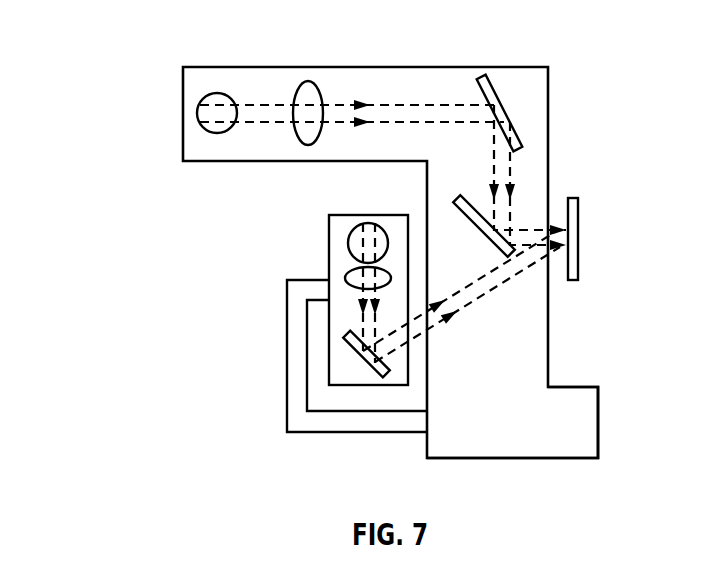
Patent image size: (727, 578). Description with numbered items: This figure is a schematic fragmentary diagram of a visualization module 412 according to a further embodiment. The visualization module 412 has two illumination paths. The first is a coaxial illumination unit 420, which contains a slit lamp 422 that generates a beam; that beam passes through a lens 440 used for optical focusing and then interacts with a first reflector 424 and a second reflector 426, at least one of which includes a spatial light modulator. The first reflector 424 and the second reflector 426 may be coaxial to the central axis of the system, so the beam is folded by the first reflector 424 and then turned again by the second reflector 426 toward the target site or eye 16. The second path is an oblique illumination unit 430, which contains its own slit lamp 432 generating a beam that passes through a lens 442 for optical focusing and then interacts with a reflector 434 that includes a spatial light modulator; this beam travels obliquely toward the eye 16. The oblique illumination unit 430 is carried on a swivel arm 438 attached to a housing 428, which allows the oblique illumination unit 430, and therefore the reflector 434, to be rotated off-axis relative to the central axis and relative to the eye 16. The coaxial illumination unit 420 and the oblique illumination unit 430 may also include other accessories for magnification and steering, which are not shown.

The eye 16 is at (572, 282).
The visualization module 412 is at (105, 107).
The coaxial illumination unit 420 is at (572, 132).
The slit lamp 422 is at (217, 133).
The first reflector 424 is at (520, 105).
The second reflector 426 is at (473, 230).
The housing 428 is at (605, 415).
The oblique illumination unit 430 is at (318, 230).
The slit lamp 432 is at (367, 225).
The reflector 434 is at (368, 367).
The swivel arm 438 is at (267, 360).
The lens 440 is at (305, 82).
The lens 442 is at (347, 270).